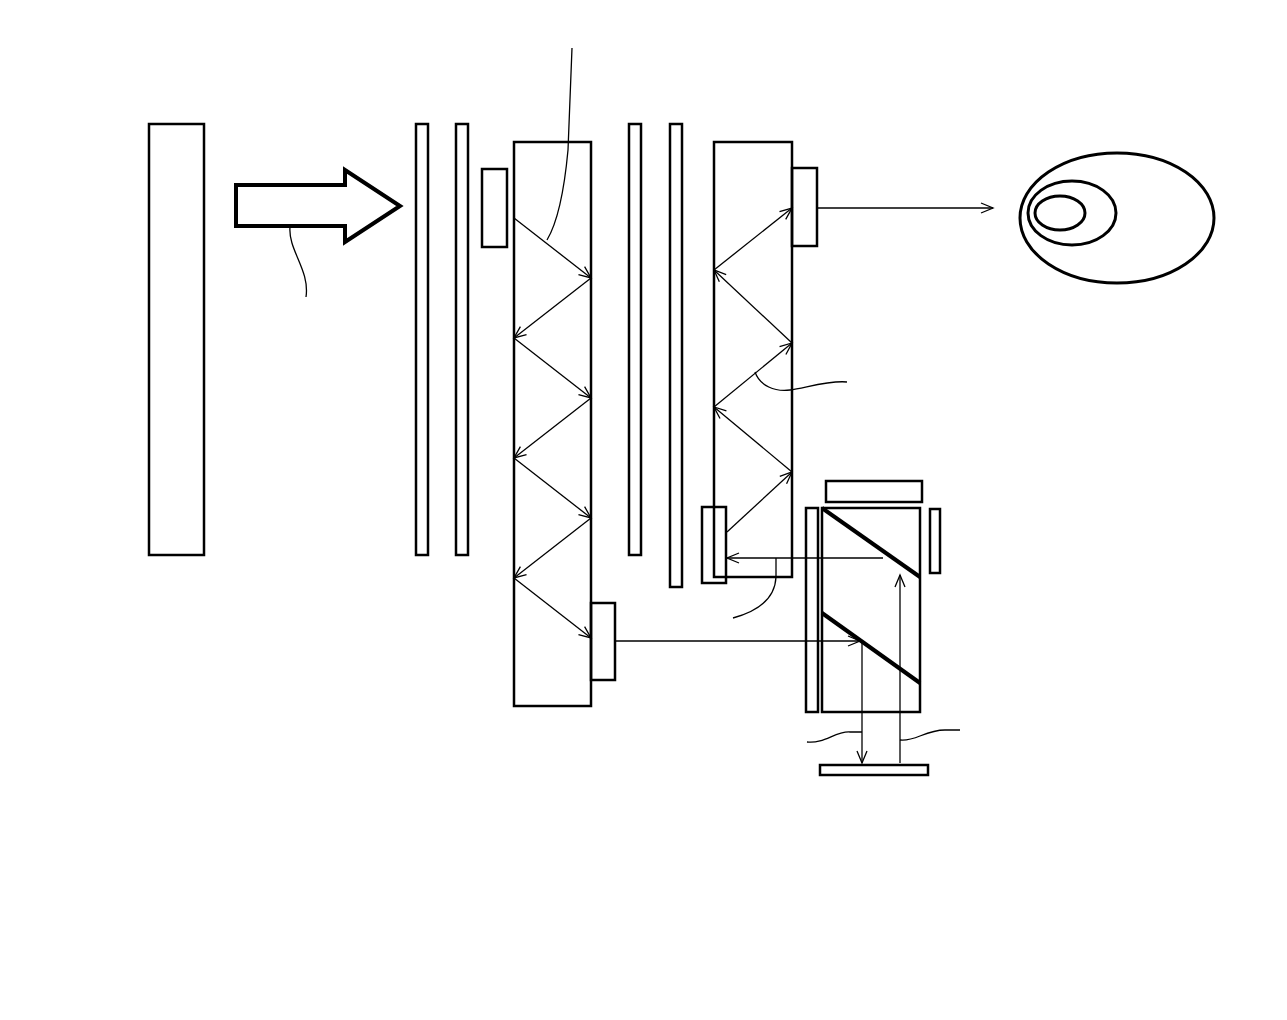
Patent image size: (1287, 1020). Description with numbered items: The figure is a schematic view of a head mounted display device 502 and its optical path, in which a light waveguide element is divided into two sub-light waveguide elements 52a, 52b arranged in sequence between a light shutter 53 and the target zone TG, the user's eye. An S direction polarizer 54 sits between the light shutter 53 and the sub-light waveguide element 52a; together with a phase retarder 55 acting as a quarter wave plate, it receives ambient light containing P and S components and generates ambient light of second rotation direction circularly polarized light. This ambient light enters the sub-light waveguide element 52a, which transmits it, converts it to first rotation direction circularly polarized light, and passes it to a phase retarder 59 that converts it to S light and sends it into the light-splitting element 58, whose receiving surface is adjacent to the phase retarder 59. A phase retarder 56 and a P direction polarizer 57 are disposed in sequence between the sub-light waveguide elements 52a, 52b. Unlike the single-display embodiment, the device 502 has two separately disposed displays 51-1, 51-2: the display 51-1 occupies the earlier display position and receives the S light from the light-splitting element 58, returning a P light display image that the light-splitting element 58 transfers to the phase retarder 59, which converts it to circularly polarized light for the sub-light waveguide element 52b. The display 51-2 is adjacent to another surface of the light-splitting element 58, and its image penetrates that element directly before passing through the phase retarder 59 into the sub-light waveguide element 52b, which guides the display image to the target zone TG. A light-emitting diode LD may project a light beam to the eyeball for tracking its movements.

The head mounted display device 502 is at (1233, 826).
The light shutter 53 is at (180, 124).
The S direction polarizer 54 is at (424, 124).
The phase retarder 55 is at (464, 124).
The sub-light waveguide element 52a is at (536, 142).
The phase retarder 56 is at (636, 124).
The P direction polarizer 57 is at (677, 124).
The sub-light waveguide element 52b is at (750, 142).
The light-splitting element 58 is at (920, 620).
The phase retarder 59 is at (806, 670).
The display 51-1 is at (878, 772).
The display 51-2 is at (940, 542).
The light-emitting diode LD is at (892, 481).
The target zone TG is at (1147, 183).